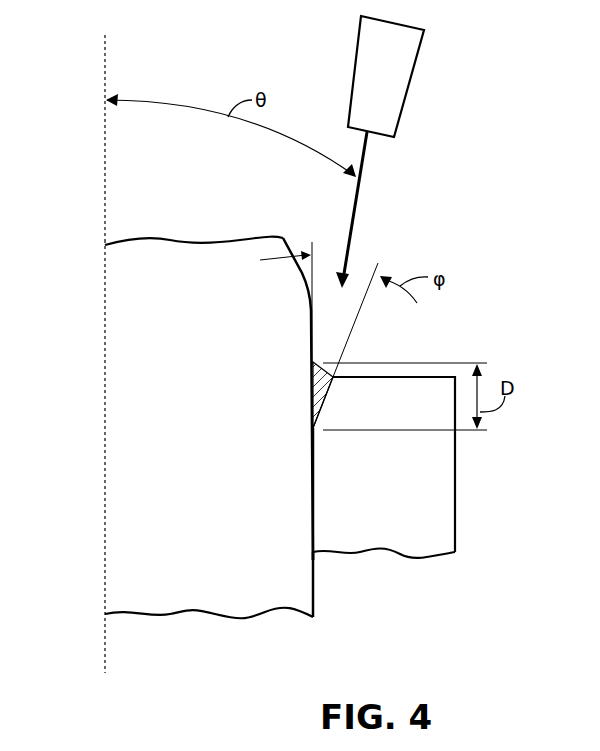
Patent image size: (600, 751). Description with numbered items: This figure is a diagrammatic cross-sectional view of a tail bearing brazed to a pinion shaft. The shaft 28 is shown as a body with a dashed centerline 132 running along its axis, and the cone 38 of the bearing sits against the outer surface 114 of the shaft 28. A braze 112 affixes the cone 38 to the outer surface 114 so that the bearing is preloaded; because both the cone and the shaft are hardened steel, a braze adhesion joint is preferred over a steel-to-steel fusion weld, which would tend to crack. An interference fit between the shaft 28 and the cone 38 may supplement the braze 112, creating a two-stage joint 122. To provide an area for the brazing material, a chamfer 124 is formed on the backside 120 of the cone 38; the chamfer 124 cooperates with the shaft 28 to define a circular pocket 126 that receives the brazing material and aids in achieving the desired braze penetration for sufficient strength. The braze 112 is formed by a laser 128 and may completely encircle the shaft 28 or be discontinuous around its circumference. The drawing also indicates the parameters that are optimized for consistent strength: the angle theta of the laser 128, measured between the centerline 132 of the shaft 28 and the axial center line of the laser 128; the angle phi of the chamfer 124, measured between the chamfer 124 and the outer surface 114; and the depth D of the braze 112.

The two-stage joint 122 is at (84, 330).
The centerline 132 is at (103, 173).
The shaft 28 is at (108, 423).
The laser 128 is at (412, 87).
The circular pocket 126 is at (292, 387).
The chamfer 124 is at (325, 405).
The braze 112 is at (312, 404).
The outer surface 114 is at (318, 578).
The backside 120 is at (458, 513).
The cone 38 is at (417, 555).